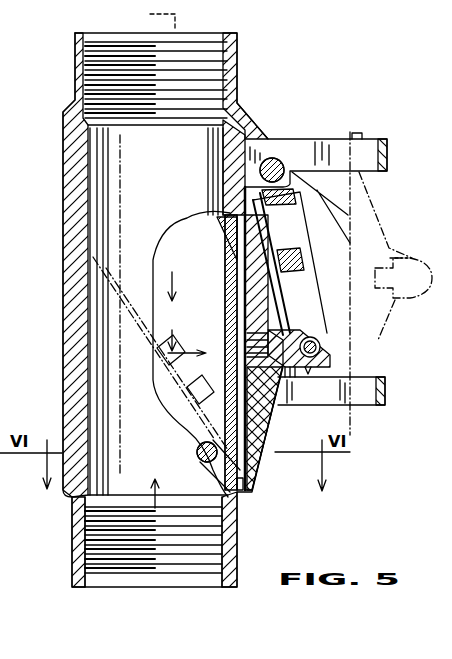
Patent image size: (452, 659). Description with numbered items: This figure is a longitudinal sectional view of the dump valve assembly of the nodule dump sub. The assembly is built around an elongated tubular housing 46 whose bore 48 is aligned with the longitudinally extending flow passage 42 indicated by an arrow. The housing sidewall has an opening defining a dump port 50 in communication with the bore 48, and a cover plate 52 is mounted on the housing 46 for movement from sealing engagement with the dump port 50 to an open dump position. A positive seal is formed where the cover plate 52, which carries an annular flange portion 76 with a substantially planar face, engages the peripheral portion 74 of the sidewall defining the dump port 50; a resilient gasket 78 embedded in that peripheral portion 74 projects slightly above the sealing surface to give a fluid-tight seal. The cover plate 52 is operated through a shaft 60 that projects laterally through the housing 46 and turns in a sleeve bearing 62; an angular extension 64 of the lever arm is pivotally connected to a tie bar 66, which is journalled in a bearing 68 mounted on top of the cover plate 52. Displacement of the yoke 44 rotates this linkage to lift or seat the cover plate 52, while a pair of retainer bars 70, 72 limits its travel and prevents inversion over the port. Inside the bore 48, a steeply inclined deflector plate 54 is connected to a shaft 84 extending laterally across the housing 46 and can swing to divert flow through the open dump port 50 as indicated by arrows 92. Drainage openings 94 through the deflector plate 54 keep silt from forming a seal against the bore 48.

The flow passage 42 is at (158, 500).
The yoke 44 is at (176, 18).
The tubular housing 46 is at (63, 178).
The bore 48 is at (88, 345).
The dump port 50 is at (266, 425).
The cover plate 52 is at (262, 458).
The deflector plate 54 is at (152, 276).
The shaft 60 is at (243, 168).
The sleeve bearing 62 is at (277, 159).
The angular extension 64 is at (318, 272).
The tie bar 66 is at (322, 342).
The bearing 68 is at (316, 372).
The retainer bar 70 is at (388, 143).
The retainer bar 72 is at (386, 392).
The peripheral portion 74 is at (265, 218).
The annular flange portion 76 is at (243, 205).
The resilient gasket 78 is at (218, 222).
The shaft 84 is at (198, 461).
The arrows 92 is at (175, 272).
The drainage openings 94 is at (155, 390).